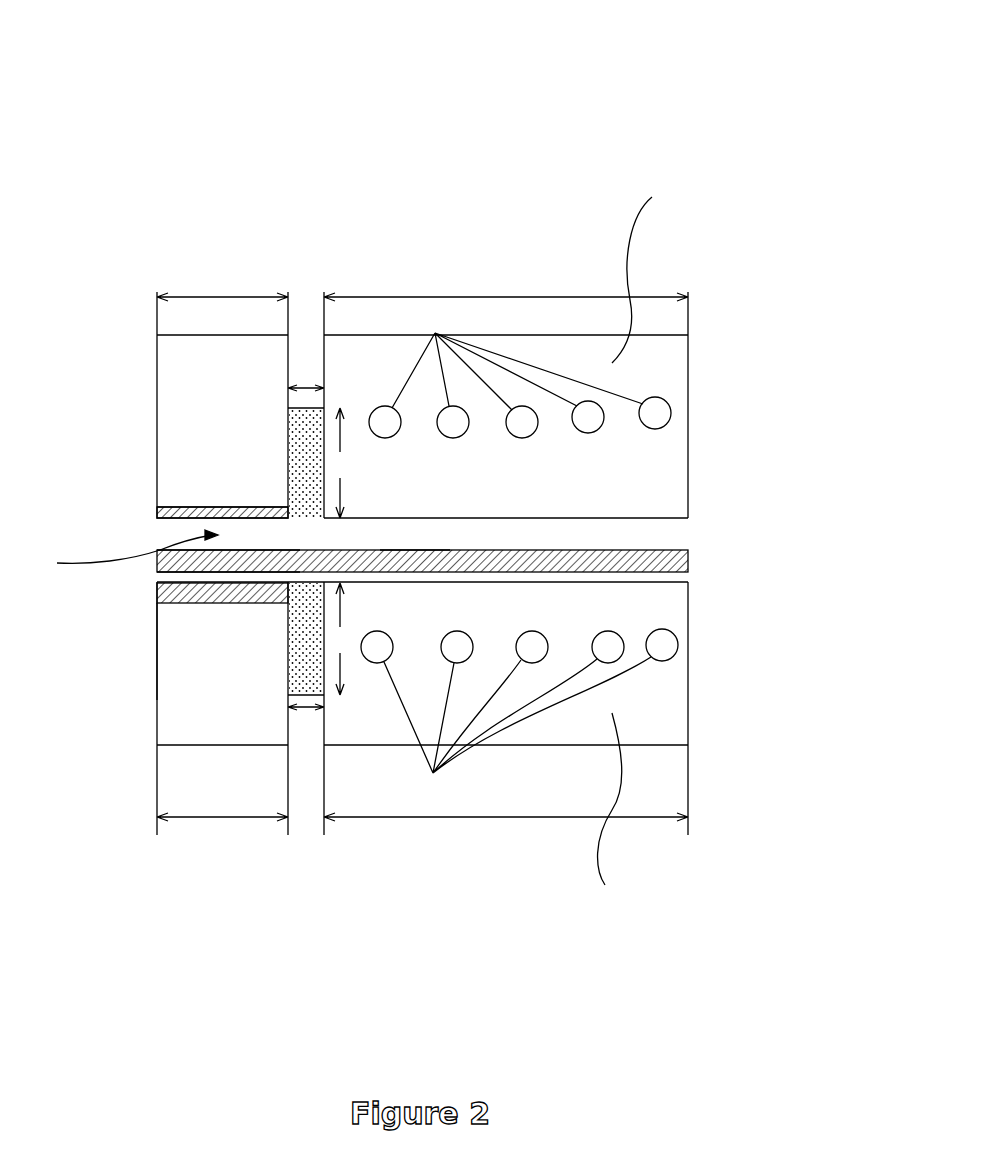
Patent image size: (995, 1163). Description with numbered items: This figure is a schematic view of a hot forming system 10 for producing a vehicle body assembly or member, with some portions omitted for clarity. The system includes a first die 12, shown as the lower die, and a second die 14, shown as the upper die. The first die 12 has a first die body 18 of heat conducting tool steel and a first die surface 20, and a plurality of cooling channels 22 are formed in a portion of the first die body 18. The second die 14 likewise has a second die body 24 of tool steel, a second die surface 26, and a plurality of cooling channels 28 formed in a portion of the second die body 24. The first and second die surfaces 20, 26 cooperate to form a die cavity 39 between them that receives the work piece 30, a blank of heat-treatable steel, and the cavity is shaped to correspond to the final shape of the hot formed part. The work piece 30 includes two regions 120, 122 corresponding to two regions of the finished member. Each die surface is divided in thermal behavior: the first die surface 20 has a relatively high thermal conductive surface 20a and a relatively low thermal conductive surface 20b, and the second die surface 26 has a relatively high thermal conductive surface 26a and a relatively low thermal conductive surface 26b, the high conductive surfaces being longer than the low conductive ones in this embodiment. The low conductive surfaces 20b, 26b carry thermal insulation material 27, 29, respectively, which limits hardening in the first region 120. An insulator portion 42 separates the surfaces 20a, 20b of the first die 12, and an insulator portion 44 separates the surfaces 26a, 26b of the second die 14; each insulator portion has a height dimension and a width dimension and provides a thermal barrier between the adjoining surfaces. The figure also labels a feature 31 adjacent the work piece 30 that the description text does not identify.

The hot forming system 10 is at (193, 45).
The first die 12 is at (165, 724).
The second die 14 is at (170, 450).
The first die body 18 is at (660, 678).
The first die surface 20 is at (672, 582).
The relatively high thermal conductive surface 20a is at (647, 583).
The relatively low thermal conductive surface 20b is at (157, 600).
The cooling channels 22 is at (519, 716).
The second die body 24 is at (670, 456).
The second die surface 26 is at (640, 520).
The relatively high thermal conductive surface 26a is at (555, 507).
The relatively low thermal conductive surface 26b is at (222, 513).
The thermal insulation material 27 is at (157, 628).
The cooling channels 28 is at (520, 372).
The thermal insulation material 29 is at (222, 505).
The work piece 30 is at (157, 560).
The lower surface of intermediate plate 31 is at (208, 560).
The die cavity 39 is at (122, 553).
The insulator portion 42 is at (291, 697).
The insulator portion 44 is at (340, 410).
The first region 120 is at (230, 558).
The second region 122 is at (407, 556).